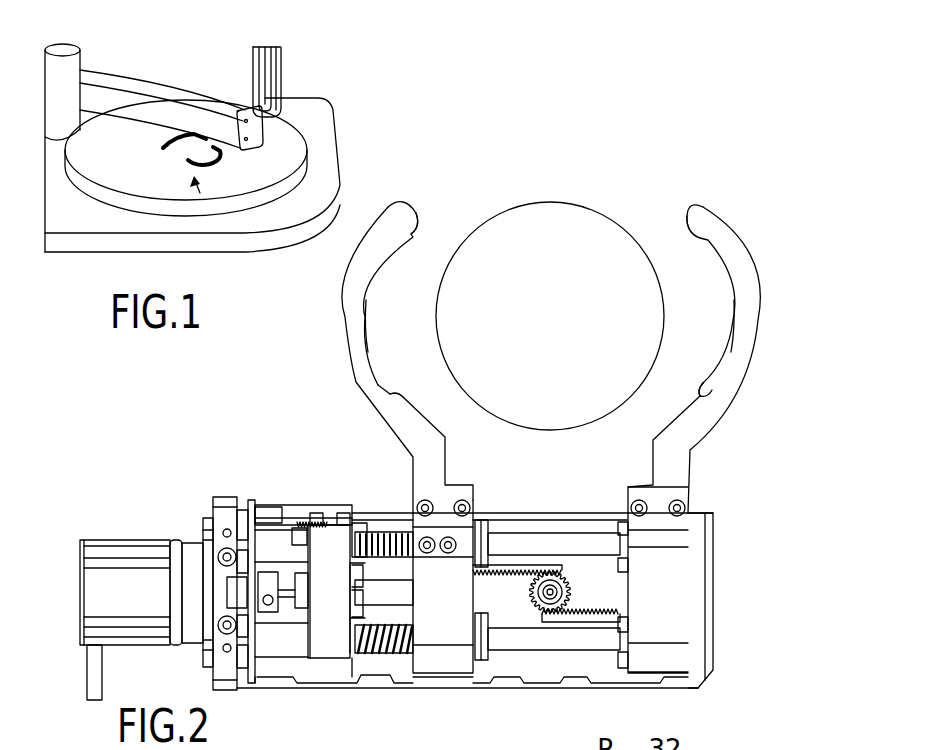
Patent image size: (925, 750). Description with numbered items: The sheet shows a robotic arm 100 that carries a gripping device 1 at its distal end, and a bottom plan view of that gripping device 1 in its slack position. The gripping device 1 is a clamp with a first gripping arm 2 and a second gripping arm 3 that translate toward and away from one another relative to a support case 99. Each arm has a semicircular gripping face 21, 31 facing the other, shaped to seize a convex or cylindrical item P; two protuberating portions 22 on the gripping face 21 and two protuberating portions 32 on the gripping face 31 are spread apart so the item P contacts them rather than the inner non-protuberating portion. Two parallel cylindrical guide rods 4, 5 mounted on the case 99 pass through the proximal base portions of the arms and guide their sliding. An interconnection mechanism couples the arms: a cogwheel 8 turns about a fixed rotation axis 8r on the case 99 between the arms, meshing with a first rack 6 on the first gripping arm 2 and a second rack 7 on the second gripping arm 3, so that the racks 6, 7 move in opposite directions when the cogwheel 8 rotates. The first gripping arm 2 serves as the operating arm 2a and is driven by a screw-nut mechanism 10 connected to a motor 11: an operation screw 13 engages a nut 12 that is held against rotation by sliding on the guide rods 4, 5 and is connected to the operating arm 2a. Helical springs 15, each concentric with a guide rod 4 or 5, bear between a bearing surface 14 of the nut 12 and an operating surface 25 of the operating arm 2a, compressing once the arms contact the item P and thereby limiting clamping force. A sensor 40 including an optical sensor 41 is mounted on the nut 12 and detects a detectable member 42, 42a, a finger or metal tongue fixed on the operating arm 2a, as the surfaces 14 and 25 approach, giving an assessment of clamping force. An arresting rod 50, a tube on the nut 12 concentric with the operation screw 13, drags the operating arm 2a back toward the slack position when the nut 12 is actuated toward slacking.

In FIG. 1, the robotic arm 100 is at (176, 83).
In FIG. 1, the support case 99 is at (215, 108).
In FIG. 2, the support case 99 is at (570, 658).
In FIG. 1, the gripping device 1 is at (200, 195).
In FIG. 1, the first gripping arm 2 is at (166, 152).
In FIG. 2, the first gripping arm 2 is at (367, 337).
In FIG. 2, the operating arm 2a is at (367, 337).
In FIG. 1, the second gripping arm 3 is at (217, 168).
In FIG. 2, the second gripping arm 3 is at (717, 335).
In FIG. 2, the item P is at (578, 203).
In FIG. 2, the gripping face 21 is at (392, 350).
In FIG. 2, the protuberating portions 22 is at (418, 228).
In FIG. 2, the gripping face 31 is at (728, 298).
In FIG. 2, the protuberating portions 32 is at (688, 222).
In FIG. 2, the guide rod 4 is at (577, 543).
In FIG. 2, the guide rod 5 is at (603, 637).
In FIG. 2, the first rack 6 is at (512, 566).
In FIG. 2, the second rack 7 is at (560, 622).
In FIG. 2, the cogwheel 8 is at (533, 604).
In FIG. 2, the rotation axis 8r is at (566, 590).
In FIG. 2, the screw-nut mechanism 10 is at (319, 628).
In FIG. 2, the motor 11 is at (110, 545).
In FIG. 2, the nut 12 is at (323, 644).
In FIG. 2, the operation screw 13 is at (284, 613).
In FIG. 2, the bearing surface 14 is at (378, 590).
In FIG. 2, the springs 15 is at (410, 596).
In FIG. 2, the operating surface 25 is at (408, 565).
In FIG. 2, the sensor 40 is at (286, 481).
In FIG. 2, the optical sensor 41 is at (300, 493).
In FIG. 2, the detectable member 42 is at (360, 532).
In FIG. 2, the spring element 42a is at (344, 492).
In FIG. 2, the arresting rod 50 is at (392, 657).